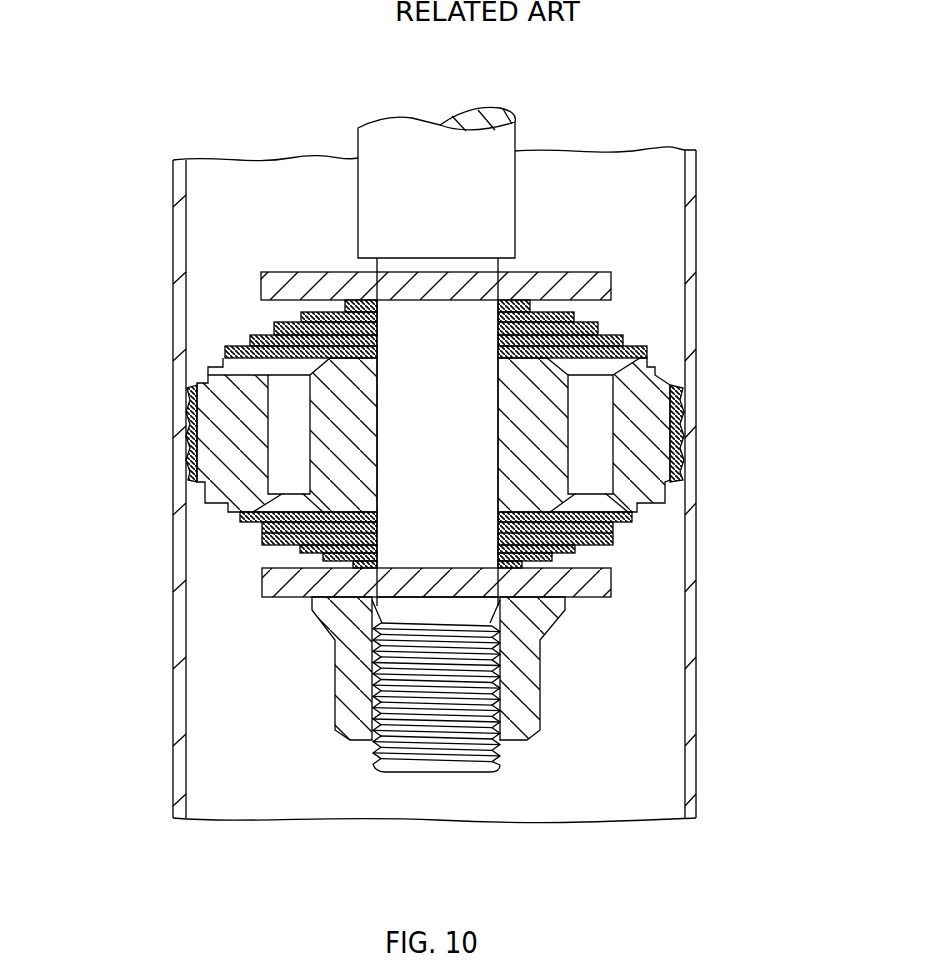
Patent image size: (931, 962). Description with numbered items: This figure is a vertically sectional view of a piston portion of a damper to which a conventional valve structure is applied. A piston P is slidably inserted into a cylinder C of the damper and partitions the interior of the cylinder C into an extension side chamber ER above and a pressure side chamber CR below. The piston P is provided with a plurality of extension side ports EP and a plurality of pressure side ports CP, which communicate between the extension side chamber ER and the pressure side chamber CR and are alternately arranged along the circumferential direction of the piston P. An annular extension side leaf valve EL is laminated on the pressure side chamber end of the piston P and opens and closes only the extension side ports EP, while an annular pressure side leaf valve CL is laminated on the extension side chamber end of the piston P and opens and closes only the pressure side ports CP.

The extension side chamber ER is at (598, 185).
The cylinder C is at (697, 225).
The pressure side leaf valve CL is at (620, 333).
The piston P is at (647, 383).
The extension side ports EP is at (277, 432).
The pressure side ports CP is at (588, 448).
The extension side leaf valve EL is at (270, 548).
The pressure side chamber CR is at (643, 747).